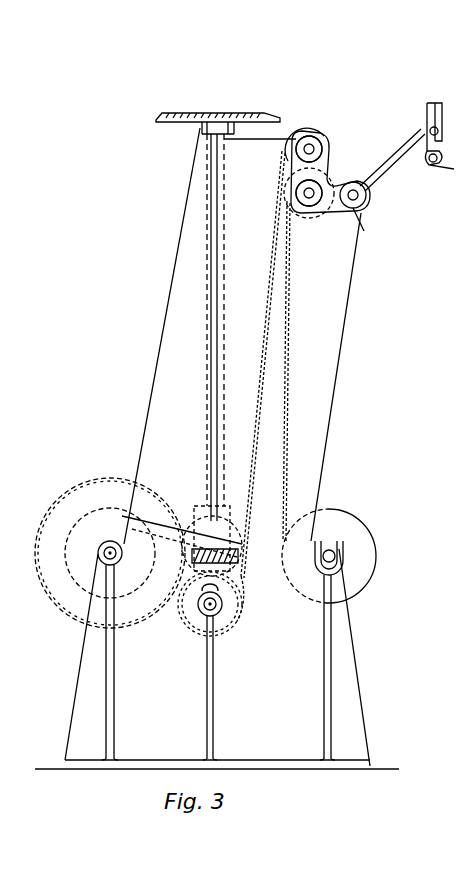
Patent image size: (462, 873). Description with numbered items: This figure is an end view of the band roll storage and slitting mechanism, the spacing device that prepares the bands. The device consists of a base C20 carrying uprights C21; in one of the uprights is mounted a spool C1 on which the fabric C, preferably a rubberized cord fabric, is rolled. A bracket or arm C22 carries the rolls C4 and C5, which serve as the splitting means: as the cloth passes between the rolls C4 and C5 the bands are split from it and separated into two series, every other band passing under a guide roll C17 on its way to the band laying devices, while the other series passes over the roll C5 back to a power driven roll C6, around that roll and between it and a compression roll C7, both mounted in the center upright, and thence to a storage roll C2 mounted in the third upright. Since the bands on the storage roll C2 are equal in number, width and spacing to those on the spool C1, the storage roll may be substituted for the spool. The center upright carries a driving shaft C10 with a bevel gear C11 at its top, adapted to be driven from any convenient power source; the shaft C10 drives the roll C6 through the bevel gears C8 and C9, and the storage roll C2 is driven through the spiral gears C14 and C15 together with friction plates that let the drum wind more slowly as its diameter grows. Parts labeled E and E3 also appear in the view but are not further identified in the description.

The spool C1 is at (365, 533).
The storage roll C2 is at (70, 577).
The roll C4 is at (305, 213).
The roll C5 is at (322, 134).
The power driven roll C6 is at (196, 628).
The compression roll C7 is at (222, 540).
The bevel gear C8 is at (240, 588).
The bevel gear C9 is at (250, 546).
The driving shaft C10 is at (203, 300).
The bevel gear C11 is at (265, 114).
The spiral gear C14 is at (86, 478).
The spiral gear C15 is at (198, 535).
The guide roll C17 is at (358, 177).
The base C20 is at (38, 762).
The uprights C21 is at (348, 655).
The bracket or arm C22 is at (325, 165).
The fabric C is at (387, 178).
The bracket E is at (440, 134).
The bracket arm E3 is at (442, 101).